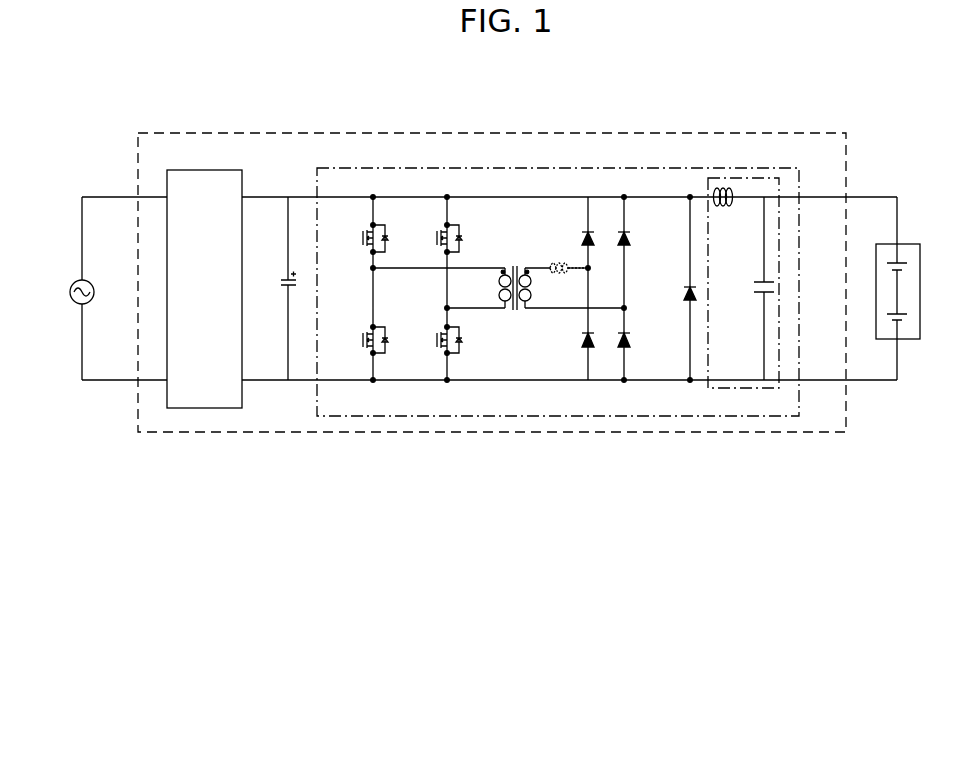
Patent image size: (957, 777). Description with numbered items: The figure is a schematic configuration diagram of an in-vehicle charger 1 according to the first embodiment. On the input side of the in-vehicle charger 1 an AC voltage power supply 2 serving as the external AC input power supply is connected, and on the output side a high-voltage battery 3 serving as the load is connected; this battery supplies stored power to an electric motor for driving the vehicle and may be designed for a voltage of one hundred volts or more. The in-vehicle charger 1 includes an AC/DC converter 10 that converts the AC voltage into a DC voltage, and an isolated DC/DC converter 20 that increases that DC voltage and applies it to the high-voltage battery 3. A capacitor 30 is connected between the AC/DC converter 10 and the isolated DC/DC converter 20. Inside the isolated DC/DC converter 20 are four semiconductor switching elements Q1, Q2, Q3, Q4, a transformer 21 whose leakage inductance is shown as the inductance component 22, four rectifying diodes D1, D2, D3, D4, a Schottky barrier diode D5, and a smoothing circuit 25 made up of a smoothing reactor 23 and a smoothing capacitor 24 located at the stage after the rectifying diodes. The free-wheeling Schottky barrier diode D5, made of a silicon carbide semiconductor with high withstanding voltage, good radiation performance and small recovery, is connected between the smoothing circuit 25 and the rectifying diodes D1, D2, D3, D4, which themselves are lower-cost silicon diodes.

The in-vehicle charger 1 is at (508, 132).
The AC voltage power supply 2 is at (76, 284).
The high-voltage battery 3 is at (920, 244).
The AC/DC converter 10 is at (214, 170).
The isolated DC/DC converter 20 is at (430, 168).
The transformer 21 is at (513, 268).
The inductance component 22 is at (556, 262).
The smoothing reactor 23 is at (731, 206).
The smoothing capacitor 24 is at (756, 285).
The smoothing circuit 25 is at (725, 390).
The capacitor 30 is at (284, 277).
The semiconductor switching element Q1 is at (366, 234).
The semiconductor switching element Q2 is at (366, 336).
The semiconductor switching element Q3 is at (440, 234).
The semiconductor switching element Q4 is at (440, 336).
The rectifying diode D1 is at (583, 236).
The rectifying diode D2 is at (583, 344).
The rectifying diode D3 is at (619, 236).
The rectifying diode D4 is at (619, 342).
The Schottky barrier diode D5 is at (686, 290).